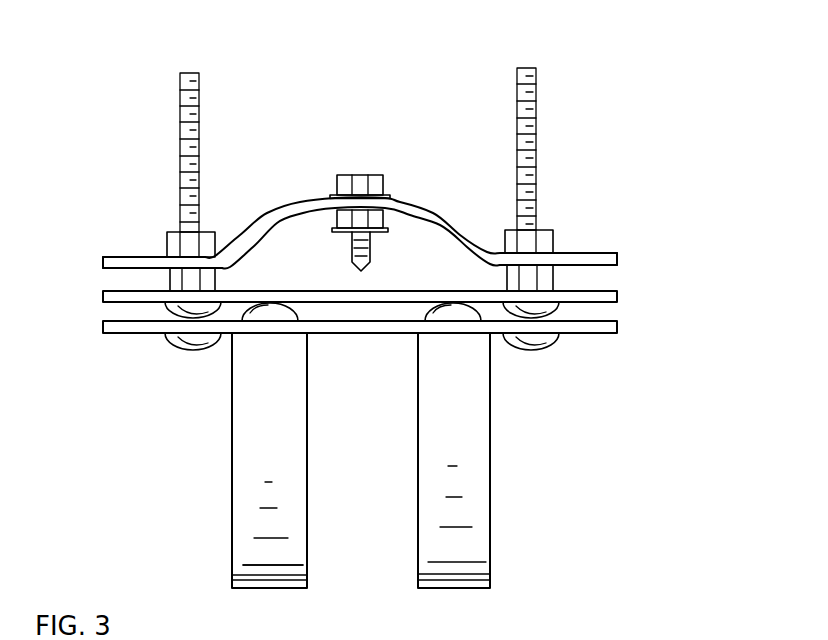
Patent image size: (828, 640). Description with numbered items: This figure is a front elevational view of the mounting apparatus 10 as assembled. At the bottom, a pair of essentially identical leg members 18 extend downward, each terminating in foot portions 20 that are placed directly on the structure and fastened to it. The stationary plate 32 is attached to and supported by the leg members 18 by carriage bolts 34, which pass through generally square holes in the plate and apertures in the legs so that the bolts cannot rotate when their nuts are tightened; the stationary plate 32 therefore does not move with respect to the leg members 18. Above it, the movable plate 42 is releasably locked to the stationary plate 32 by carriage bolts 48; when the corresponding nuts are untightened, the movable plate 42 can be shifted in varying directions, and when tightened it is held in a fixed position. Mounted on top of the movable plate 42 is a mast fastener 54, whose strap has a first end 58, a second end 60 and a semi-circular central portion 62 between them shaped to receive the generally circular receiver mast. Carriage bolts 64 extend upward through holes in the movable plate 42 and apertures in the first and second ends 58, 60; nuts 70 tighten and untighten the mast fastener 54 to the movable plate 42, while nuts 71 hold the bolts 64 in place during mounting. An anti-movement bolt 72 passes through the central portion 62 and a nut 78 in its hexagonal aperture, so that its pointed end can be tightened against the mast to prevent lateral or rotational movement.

The mounting apparatus 10 is at (448, 70).
The leg members 18 is at (220, 523).
The foot portions 20 is at (289, 588).
The stationary plate 32 is at (573, 326).
The carriage bolts 34 is at (262, 313).
The movable plate 42 is at (341, 291).
The carriage bolts 48 is at (172, 346).
The mast fasteners 54 is at (436, 197).
The first end 58 is at (112, 256).
The second end 60 is at (577, 253).
The central portion 62 is at (292, 203).
The carriage bolts 64 is at (182, 135).
The nuts 70 is at (167, 238).
The nuts 71 is at (170, 280).
The bolt 72 is at (352, 175).
The nut 78 is at (385, 222).